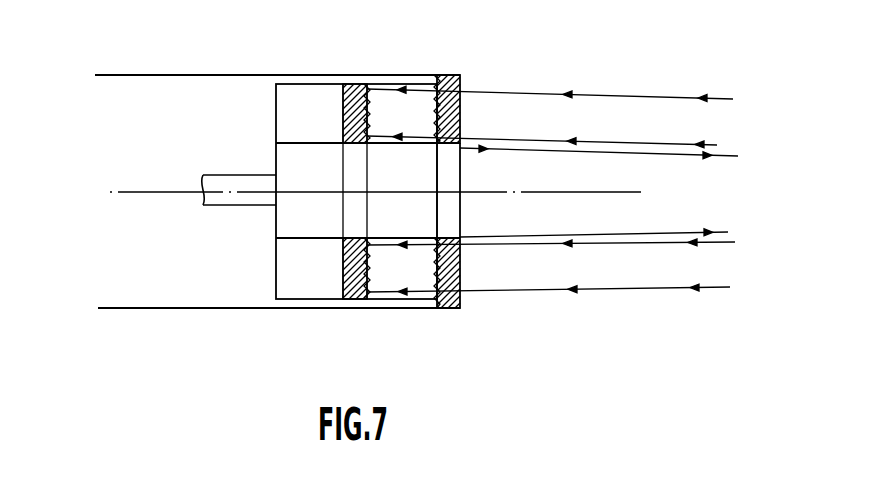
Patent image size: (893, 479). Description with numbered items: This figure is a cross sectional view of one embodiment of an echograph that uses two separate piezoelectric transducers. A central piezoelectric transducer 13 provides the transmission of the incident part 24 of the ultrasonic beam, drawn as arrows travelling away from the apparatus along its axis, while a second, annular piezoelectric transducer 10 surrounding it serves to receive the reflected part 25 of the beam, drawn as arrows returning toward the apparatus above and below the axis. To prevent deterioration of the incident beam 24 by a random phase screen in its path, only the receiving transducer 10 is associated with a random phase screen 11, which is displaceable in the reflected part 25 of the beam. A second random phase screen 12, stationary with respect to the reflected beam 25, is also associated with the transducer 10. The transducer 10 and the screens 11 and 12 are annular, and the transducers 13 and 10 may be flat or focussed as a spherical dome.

The piezoelectric transducer 10 is at (293, 100).
The random phase screen 11 is at (461, 112).
The second random phase screen 12 is at (353, 83).
The piezoelectric transducer 13 is at (283, 220).
The incident part of the ultrasonic beam 24 is at (668, 180).
The reflected part of the ultrasonic beam 25 is at (637, 107).